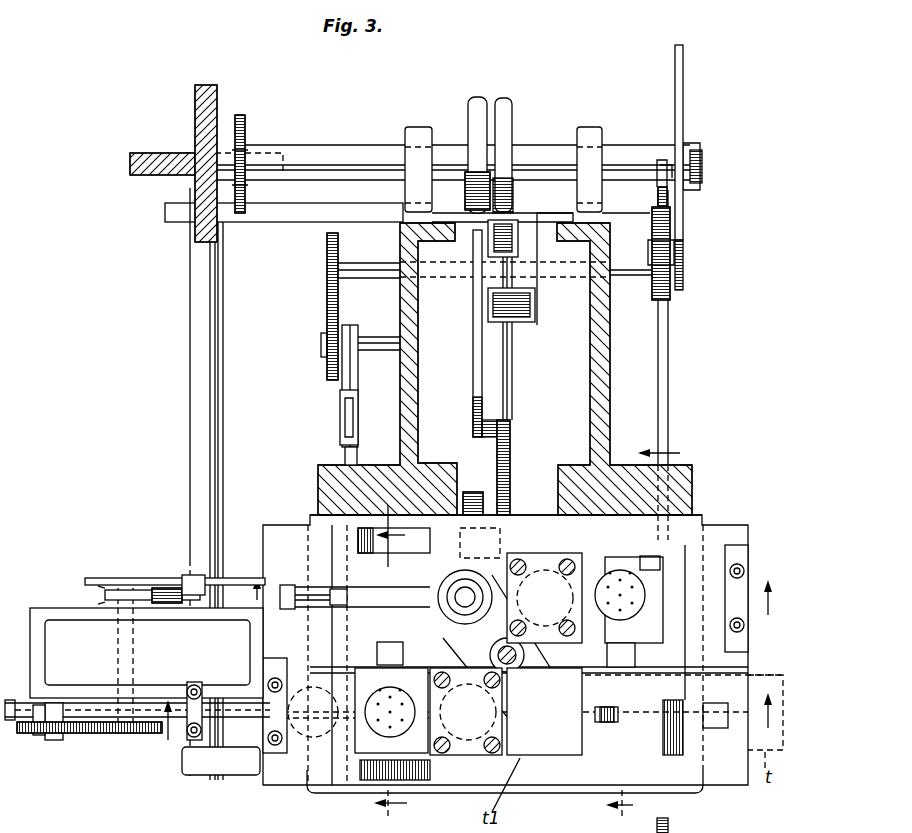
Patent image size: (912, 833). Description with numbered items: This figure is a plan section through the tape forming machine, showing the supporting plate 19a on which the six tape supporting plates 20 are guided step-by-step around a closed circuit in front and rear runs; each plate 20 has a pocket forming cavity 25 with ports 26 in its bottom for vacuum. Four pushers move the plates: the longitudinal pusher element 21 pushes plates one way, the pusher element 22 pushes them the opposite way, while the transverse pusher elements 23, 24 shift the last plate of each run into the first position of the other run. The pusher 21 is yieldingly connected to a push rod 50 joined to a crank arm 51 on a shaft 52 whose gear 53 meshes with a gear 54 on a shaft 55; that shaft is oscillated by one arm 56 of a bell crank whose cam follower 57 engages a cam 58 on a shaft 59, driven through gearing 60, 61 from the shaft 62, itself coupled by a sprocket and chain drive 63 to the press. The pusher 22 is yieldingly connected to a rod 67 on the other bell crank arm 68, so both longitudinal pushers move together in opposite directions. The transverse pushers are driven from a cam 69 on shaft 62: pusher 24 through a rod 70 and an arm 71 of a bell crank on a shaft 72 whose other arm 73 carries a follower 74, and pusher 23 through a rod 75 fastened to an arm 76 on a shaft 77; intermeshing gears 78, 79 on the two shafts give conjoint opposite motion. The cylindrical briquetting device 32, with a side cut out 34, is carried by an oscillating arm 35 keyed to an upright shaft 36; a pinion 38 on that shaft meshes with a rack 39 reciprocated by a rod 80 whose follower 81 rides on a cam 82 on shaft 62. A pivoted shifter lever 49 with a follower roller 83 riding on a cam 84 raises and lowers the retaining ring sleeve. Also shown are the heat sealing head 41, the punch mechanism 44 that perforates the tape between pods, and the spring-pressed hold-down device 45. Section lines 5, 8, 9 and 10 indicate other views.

The section line 5 is at (469, 717).
The section line 8 is at (512, 609).
The section line 9 is at (397, 662).
The section line 10 is at (657, 630).
The supporting plate 19a is at (724, 530).
The tape supporting plate 20 is at (655, 612).
The pusher element 21 is at (606, 722).
The pusher element 22 is at (400, 606).
The pusher element 23 is at (376, 770).
The pusher element 24 is at (598, 548).
The pocket forming cavity 25 is at (648, 582).
The ports 26 is at (645, 594).
The briquetting device 32 is at (458, 576).
The cut out 34 is at (508, 600).
The oscillating arm 35 is at (455, 624).
The upright shaft 36 is at (515, 642).
The pinion 38 is at (578, 656).
The rack 39 is at (462, 550).
The heat sealing head 41 is at (541, 538).
The punch mechanism 44 is at (277, 678).
The hold-down device 45 is at (190, 733).
The shifter lever 49 is at (512, 458).
The push rod 50 is at (250, 775).
The crank arm 51 is at (15, 703).
The shaft 52 is at (53, 740).
The gear 53 is at (35, 736).
The gear 54 is at (106, 733).
The shaft 55 is at (120, 643).
The bell crank arm 56 is at (170, 588).
The cam follower 57 is at (205, 575).
The cam 58 is at (96, 578).
The shaft 59 is at (190, 388).
The gearing 60 is at (132, 153).
The gearing 61 is at (195, 103).
The shaft 62 is at (338, 146).
The sprocket and chain drive 63 is at (246, 130).
The rod 67 is at (292, 590).
The bell crank arm 68 is at (105, 593).
The cam 69 is at (684, 97).
The rod 70 is at (668, 366).
The bell crank arm 71 is at (652, 238).
The shaft 72 is at (648, 277).
The bell crank arm 73 is at (658, 193).
The follower 74 is at (668, 158).
The rod 75 is at (345, 456).
The arm 76 is at (358, 374).
The shaft 77 is at (368, 337).
The gear 78 is at (327, 245).
The gear 79 is at (327, 320).
The rod 80 is at (513, 380).
The follower 81 is at (520, 220).
The cam 82 is at (513, 106).
The follower roller 83 is at (478, 168).
The cam 84 is at (468, 108).